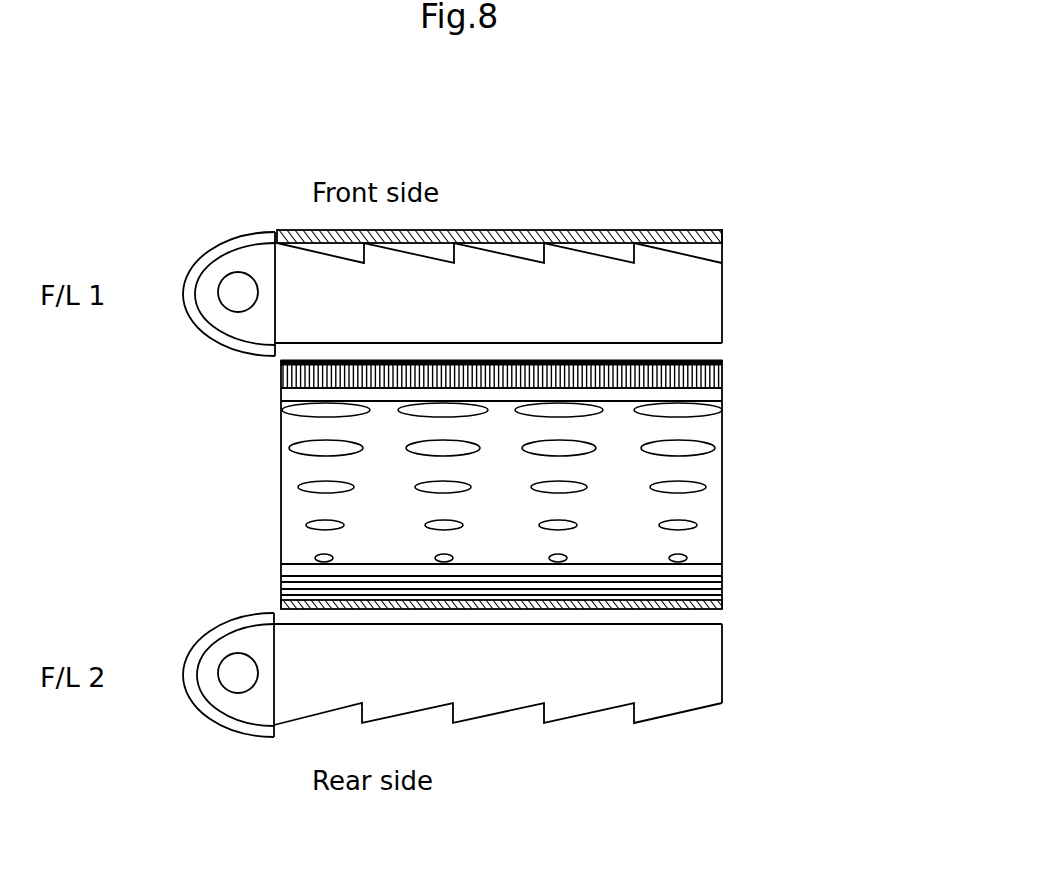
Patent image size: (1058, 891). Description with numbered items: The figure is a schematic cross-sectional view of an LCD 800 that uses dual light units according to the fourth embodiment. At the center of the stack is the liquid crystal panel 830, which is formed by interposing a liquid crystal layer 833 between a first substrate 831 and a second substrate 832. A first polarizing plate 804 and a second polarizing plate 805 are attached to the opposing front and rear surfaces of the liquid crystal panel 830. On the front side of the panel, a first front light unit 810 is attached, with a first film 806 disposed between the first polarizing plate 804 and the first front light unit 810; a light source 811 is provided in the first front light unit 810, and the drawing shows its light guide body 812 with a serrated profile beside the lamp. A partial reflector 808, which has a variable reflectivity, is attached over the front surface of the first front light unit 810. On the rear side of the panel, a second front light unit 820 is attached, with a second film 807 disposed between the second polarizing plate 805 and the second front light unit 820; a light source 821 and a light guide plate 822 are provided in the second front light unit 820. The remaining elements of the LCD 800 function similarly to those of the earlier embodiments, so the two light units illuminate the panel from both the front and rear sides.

The LCD 800 is at (874, 362).
The first polarizing plate 804 is at (281, 382).
The second polarizing plate 805 is at (722, 595).
The first film 806 is at (722, 361).
The second film 807 is at (722, 604).
The partial reflector 808 is at (722, 233).
The first front light unit 810 is at (245, 222).
The light source 811 is at (237, 300).
The first light guide plate 812 is at (722, 291).
The second front light unit 820 is at (565, 765).
The light source 821 is at (235, 680).
The light guide plate 822 is at (722, 688).
The liquid crystal panel 830 is at (837, 410).
The first substrate 831 is at (722, 572).
The second substrate 832 is at (722, 406).
The liquid crystal layer 833 is at (722, 504).